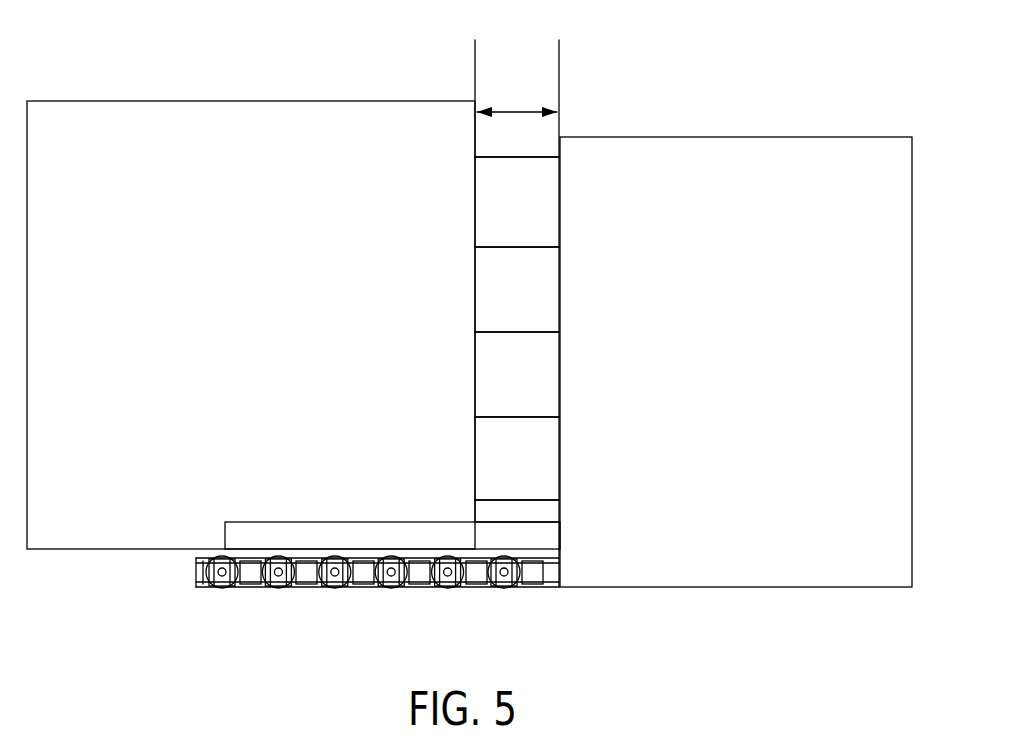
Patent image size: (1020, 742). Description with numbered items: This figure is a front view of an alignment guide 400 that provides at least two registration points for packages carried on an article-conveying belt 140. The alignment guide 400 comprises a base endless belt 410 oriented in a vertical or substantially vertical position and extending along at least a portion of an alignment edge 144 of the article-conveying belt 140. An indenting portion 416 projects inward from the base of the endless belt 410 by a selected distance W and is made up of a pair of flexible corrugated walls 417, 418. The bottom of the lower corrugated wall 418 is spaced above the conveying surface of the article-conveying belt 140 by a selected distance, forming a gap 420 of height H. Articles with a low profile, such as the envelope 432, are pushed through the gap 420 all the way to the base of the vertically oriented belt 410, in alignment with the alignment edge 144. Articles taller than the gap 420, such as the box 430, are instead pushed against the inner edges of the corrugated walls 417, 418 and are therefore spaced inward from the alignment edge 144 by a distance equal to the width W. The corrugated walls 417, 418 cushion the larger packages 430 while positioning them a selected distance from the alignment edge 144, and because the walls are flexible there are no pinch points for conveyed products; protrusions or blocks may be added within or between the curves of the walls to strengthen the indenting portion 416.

The alignment guide 400 is at (830, 76).
The base endless belt 410 is at (717, 160).
The indenting portion 416 is at (462, 157).
The corrugated wall 417 is at (533, 228).
The lower corrugated wall 418 is at (522, 385).
The gap 420 is at (504, 512).
The box 430 is at (138, 142).
The envelope 432 is at (350, 530).
The article-conveying belt 140 is at (307, 601).
The alignment edge 144 is at (561, 567).